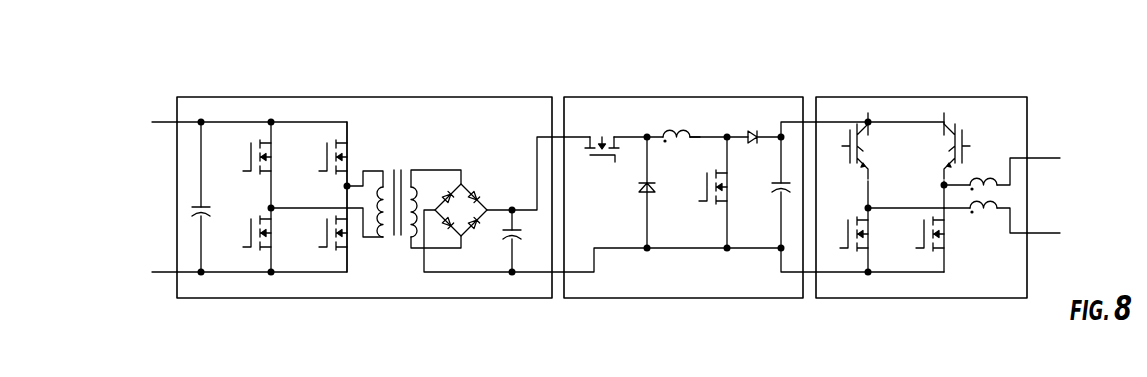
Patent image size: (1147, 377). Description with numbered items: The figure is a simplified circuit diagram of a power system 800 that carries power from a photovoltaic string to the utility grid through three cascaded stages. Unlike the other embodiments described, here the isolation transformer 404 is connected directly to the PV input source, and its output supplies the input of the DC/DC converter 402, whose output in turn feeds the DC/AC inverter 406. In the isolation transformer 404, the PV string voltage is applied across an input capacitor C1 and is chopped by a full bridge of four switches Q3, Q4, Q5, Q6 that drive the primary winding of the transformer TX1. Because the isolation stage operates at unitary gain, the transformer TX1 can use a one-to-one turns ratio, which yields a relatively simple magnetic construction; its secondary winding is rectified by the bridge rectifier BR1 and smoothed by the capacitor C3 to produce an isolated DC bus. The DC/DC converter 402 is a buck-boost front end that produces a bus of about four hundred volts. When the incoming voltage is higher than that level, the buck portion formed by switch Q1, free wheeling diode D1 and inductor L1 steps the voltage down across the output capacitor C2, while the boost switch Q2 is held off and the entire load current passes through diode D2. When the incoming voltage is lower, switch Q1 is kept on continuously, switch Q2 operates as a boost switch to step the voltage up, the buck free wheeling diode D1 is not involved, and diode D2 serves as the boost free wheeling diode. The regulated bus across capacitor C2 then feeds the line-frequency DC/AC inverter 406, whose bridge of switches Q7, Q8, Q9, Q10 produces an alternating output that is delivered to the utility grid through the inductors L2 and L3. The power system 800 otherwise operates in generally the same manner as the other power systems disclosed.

The power system 800 is at (237, 58).
The isolation transformer 404 is at (447, 298).
The DC/DC converter 402 is at (682, 298).
The DC/AC inverter 406 is at (907, 298).
The input capacitor C1 is at (204, 197).
The switch Q3 is at (254, 165).
The switch Q4 is at (254, 240).
The switch Q5 is at (330, 229).
The switch Q6 is at (330, 161).
The transformer TX1 is at (419, 189).
The bridge rectifier BR1 is at (494, 204).
The capacitor C3 is at (506, 241).
The buck switch Q1 is at (602, 133).
The inductor L1 is at (673, 148).
The buck free wheeling diode D1 is at (637, 192).
The boost switch Q2 is at (713, 192).
The diode D2 is at (754, 124).
The output capacitor C2 is at (775, 192).
The switch Q7 is at (867, 160).
The switch Q8 is at (946, 160).
The switch Q9 is at (927, 240).
The switch Q10 is at (850, 240).
The inductor L2 is at (985, 171).
The inductor L3 is at (985, 221).